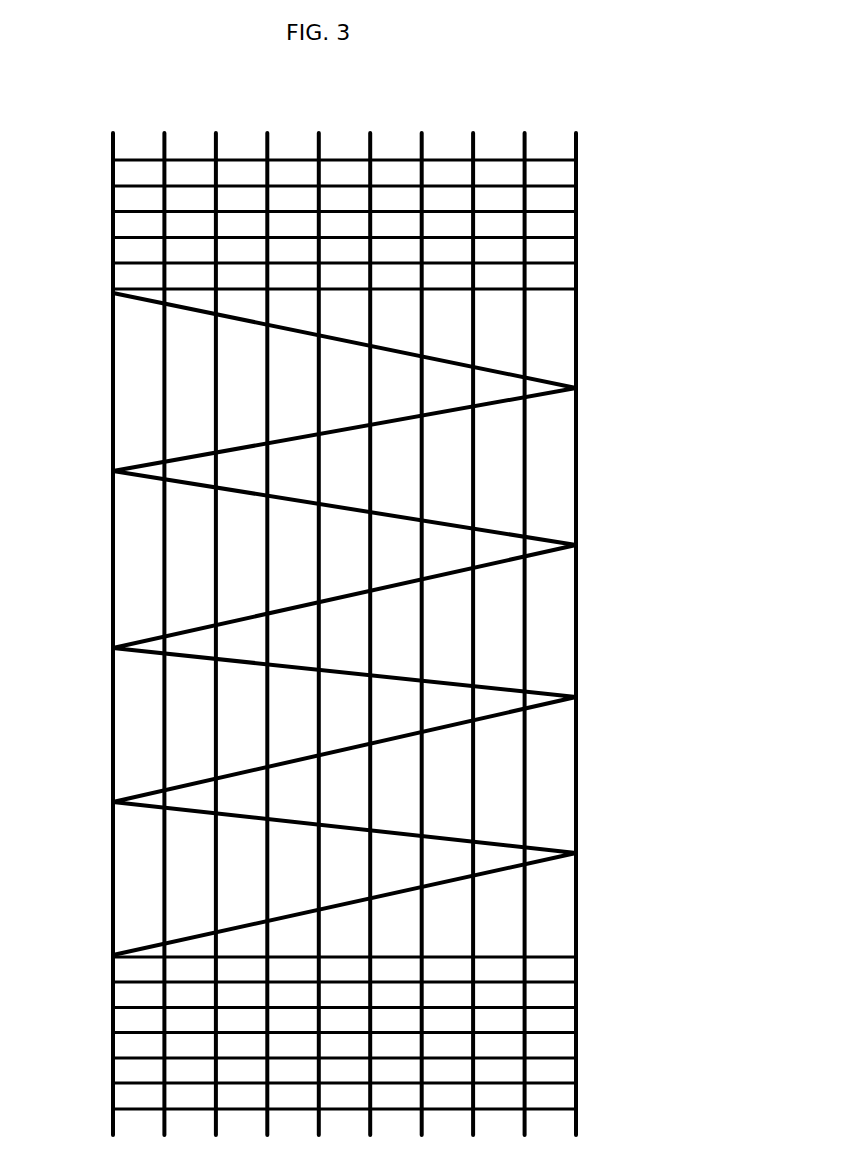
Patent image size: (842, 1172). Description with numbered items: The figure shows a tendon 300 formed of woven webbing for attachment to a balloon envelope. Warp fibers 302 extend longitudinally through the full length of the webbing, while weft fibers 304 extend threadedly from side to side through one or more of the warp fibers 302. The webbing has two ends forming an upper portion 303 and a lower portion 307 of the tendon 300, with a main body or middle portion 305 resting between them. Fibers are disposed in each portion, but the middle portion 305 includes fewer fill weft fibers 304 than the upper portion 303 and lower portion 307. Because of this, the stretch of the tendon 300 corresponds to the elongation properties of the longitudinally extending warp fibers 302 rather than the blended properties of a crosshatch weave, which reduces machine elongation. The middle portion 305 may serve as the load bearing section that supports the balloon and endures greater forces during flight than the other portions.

The tendon 300 is at (725, 42).
The warp fibers 302 is at (113, 133).
The upper portion 303 is at (627, 134).
The weft fibers 304 is at (138, 162).
The middle portion 305 is at (627, 302).
The lower portion 307 is at (627, 967).